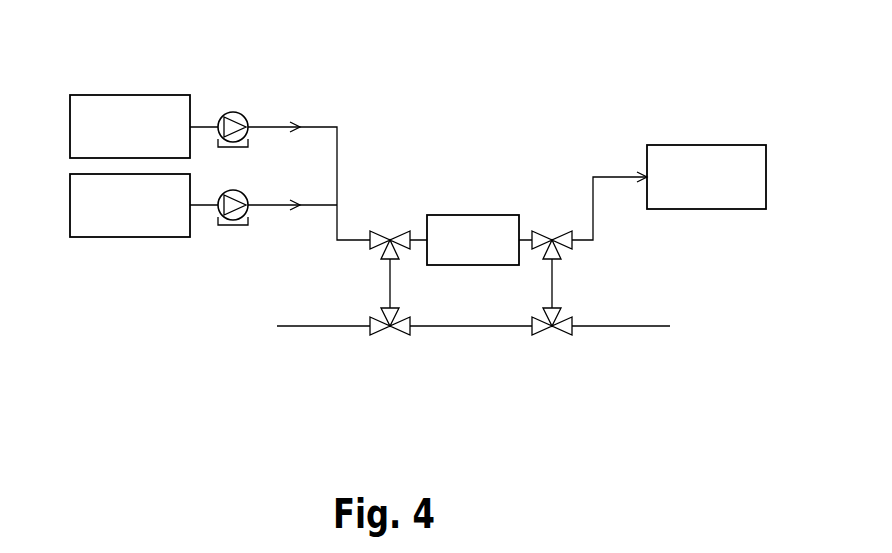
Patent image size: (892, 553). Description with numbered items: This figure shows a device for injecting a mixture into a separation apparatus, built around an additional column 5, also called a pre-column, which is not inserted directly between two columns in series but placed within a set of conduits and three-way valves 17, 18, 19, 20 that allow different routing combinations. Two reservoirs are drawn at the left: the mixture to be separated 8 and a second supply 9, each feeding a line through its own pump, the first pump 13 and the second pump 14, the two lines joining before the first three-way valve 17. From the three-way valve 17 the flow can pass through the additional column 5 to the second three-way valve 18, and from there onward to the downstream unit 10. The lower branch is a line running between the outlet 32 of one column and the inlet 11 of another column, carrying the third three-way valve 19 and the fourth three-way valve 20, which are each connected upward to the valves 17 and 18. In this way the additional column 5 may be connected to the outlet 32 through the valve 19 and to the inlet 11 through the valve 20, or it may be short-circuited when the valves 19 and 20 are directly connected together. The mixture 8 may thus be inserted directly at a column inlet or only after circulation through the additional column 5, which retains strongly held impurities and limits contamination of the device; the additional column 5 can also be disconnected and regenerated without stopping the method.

The additional column 5 is at (467, 229).
The mixture to be separated 8 is at (126, 102).
The second reservoir 9 is at (129, 226).
The consumer unit 10 is at (687, 150).
The inlet of column 11 is at (618, 328).
The pump 13 is at (238, 113).
The pump 14 is at (233, 224).
The three-way valve 17 is at (378, 233).
The three-way valve 18 is at (562, 233).
The three-way valve 19 is at (397, 334).
The three-way valve 20 is at (538, 333).
The outlet of column 32 is at (312, 328).